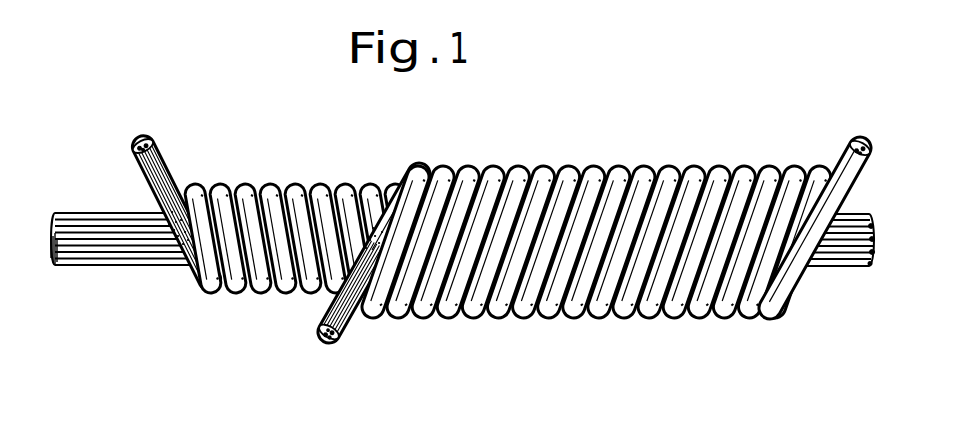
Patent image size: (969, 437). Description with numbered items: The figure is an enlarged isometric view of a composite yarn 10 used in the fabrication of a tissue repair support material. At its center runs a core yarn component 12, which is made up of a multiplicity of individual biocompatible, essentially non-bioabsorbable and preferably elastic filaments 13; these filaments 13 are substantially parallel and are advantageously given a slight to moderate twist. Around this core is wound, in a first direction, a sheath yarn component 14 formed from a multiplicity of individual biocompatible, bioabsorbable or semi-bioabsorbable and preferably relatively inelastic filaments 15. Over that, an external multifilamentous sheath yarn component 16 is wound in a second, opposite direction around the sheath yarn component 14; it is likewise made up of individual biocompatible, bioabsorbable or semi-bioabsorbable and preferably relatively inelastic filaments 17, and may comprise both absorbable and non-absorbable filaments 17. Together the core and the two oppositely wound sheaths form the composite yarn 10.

The composite yarn 10 is at (474, 219).
The core yarn component 12 is at (85, 212).
The filaments 13 is at (53, 264).
The sheath yarn component 14 is at (170, 168).
The filaments 15 is at (133, 142).
The external multifilamentous sheath yarn component 16 is at (326, 318).
The filaments 17 is at (333, 342).